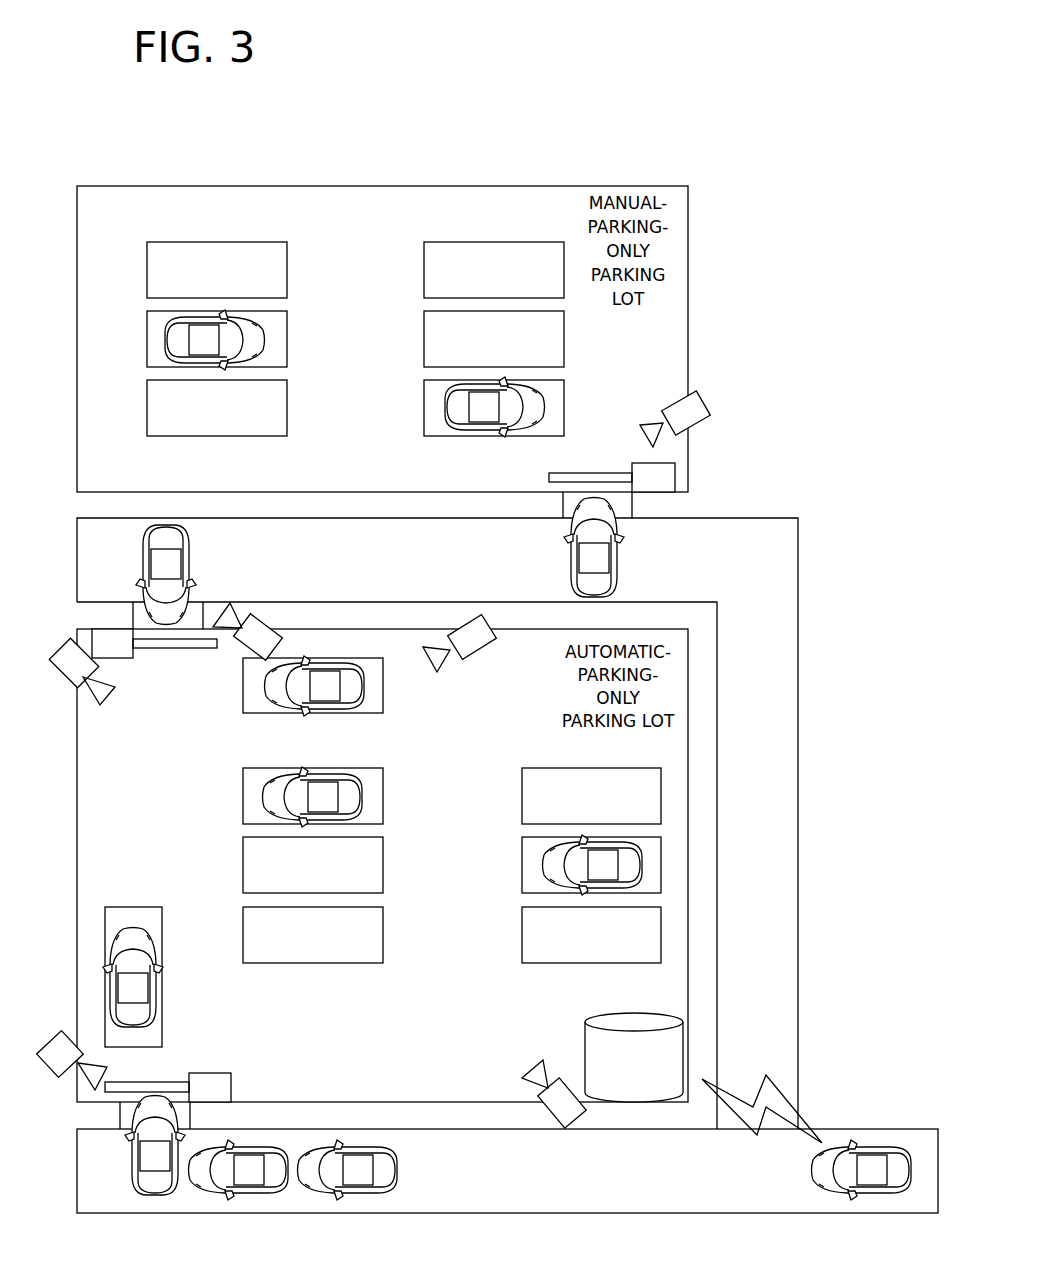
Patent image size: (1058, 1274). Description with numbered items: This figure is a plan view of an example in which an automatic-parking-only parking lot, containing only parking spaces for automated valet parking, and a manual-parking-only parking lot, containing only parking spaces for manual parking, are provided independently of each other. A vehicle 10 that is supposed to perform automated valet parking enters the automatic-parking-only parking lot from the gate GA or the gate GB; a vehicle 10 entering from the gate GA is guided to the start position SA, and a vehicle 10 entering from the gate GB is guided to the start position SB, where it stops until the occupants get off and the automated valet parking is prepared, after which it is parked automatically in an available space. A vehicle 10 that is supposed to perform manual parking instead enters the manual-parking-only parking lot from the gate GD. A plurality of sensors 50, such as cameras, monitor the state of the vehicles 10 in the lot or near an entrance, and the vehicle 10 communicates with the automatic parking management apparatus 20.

The vehicle 10 is at (865, 1148).
The automatic parking management apparatus 20 is at (637, 1012).
The sensor 50 is at (700, 430).
The gate GA is at (210, 1088).
The gate GB is at (112, 647).
The gate GD is at (655, 473).
The automated valet parking start position SA is at (162, 1017).
The automated valet parking start position SB is at (245, 697).